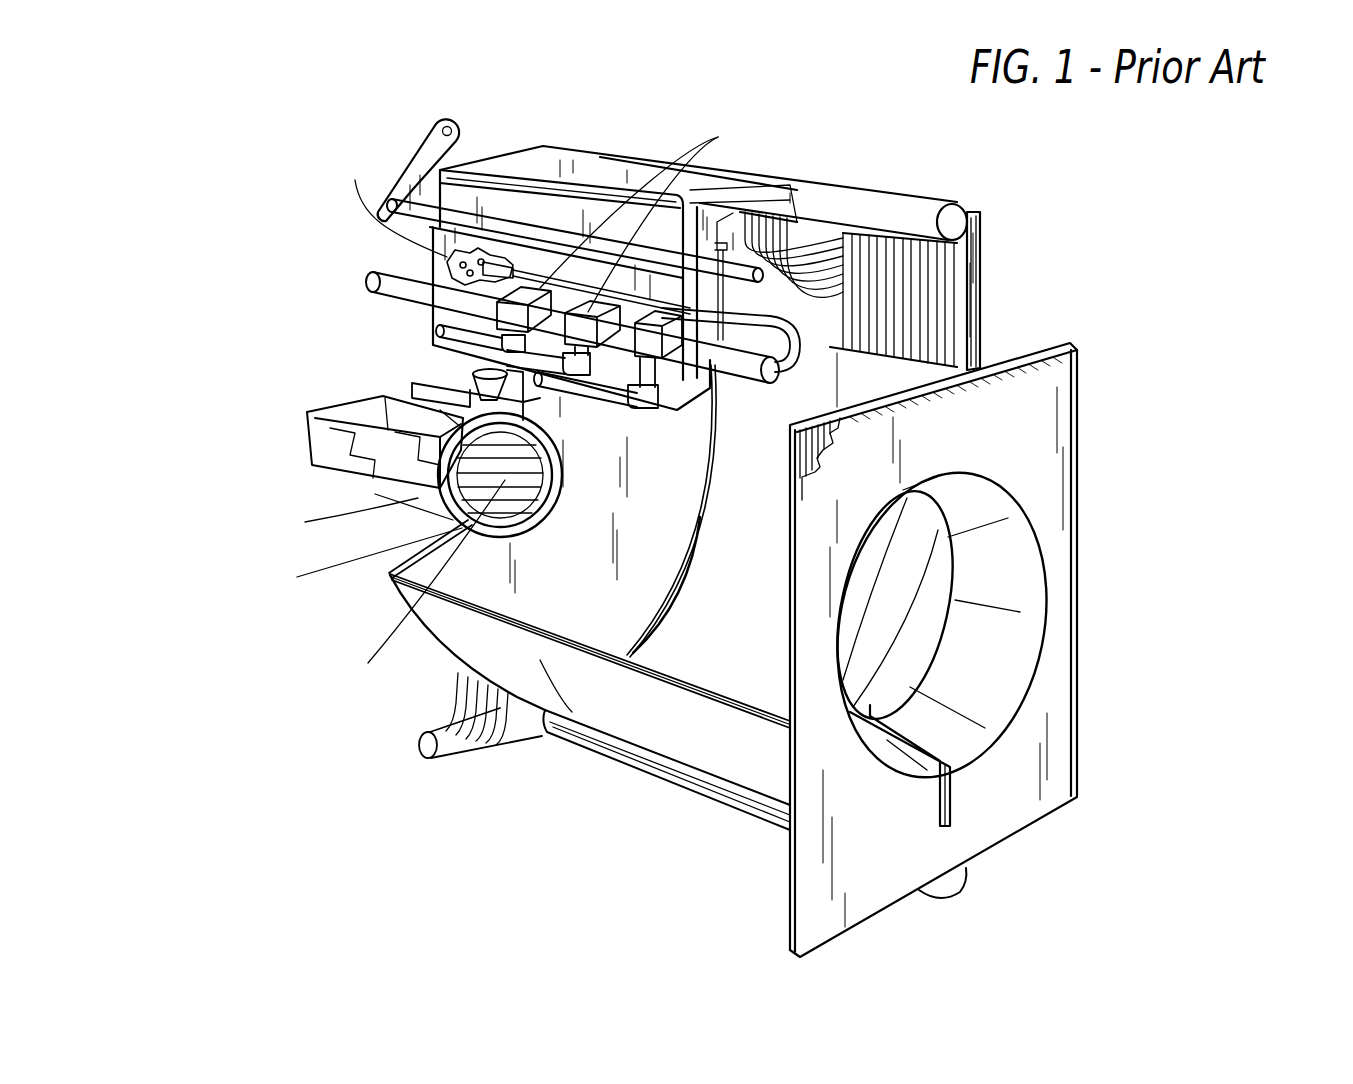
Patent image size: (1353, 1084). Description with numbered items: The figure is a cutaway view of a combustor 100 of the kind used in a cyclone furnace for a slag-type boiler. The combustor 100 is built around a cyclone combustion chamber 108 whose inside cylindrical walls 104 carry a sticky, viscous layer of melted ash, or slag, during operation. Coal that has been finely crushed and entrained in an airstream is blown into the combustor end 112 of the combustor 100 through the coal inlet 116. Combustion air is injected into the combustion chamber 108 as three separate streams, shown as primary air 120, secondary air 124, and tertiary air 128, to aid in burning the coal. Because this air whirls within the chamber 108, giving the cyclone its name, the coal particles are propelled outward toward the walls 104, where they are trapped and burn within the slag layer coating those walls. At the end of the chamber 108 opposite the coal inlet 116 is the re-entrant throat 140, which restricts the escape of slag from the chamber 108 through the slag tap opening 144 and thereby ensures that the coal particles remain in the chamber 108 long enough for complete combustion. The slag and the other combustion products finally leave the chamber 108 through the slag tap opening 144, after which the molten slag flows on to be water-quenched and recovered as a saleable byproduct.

The combustor 100 is at (513, 853).
The cylindrical walls 104 is at (543, 578).
The combustion chamber 108 is at (562, 581).
The combustor end 112 is at (390, 577).
The coal inlet 116 is at (470, 370).
The primary air 120 is at (390, 450).
The secondary air 124 is at (527, 262).
The tertiary air 128 is at (322, 432).
The re-entrant throat 140 is at (953, 661).
The slag tap opening 144 is at (953, 803).